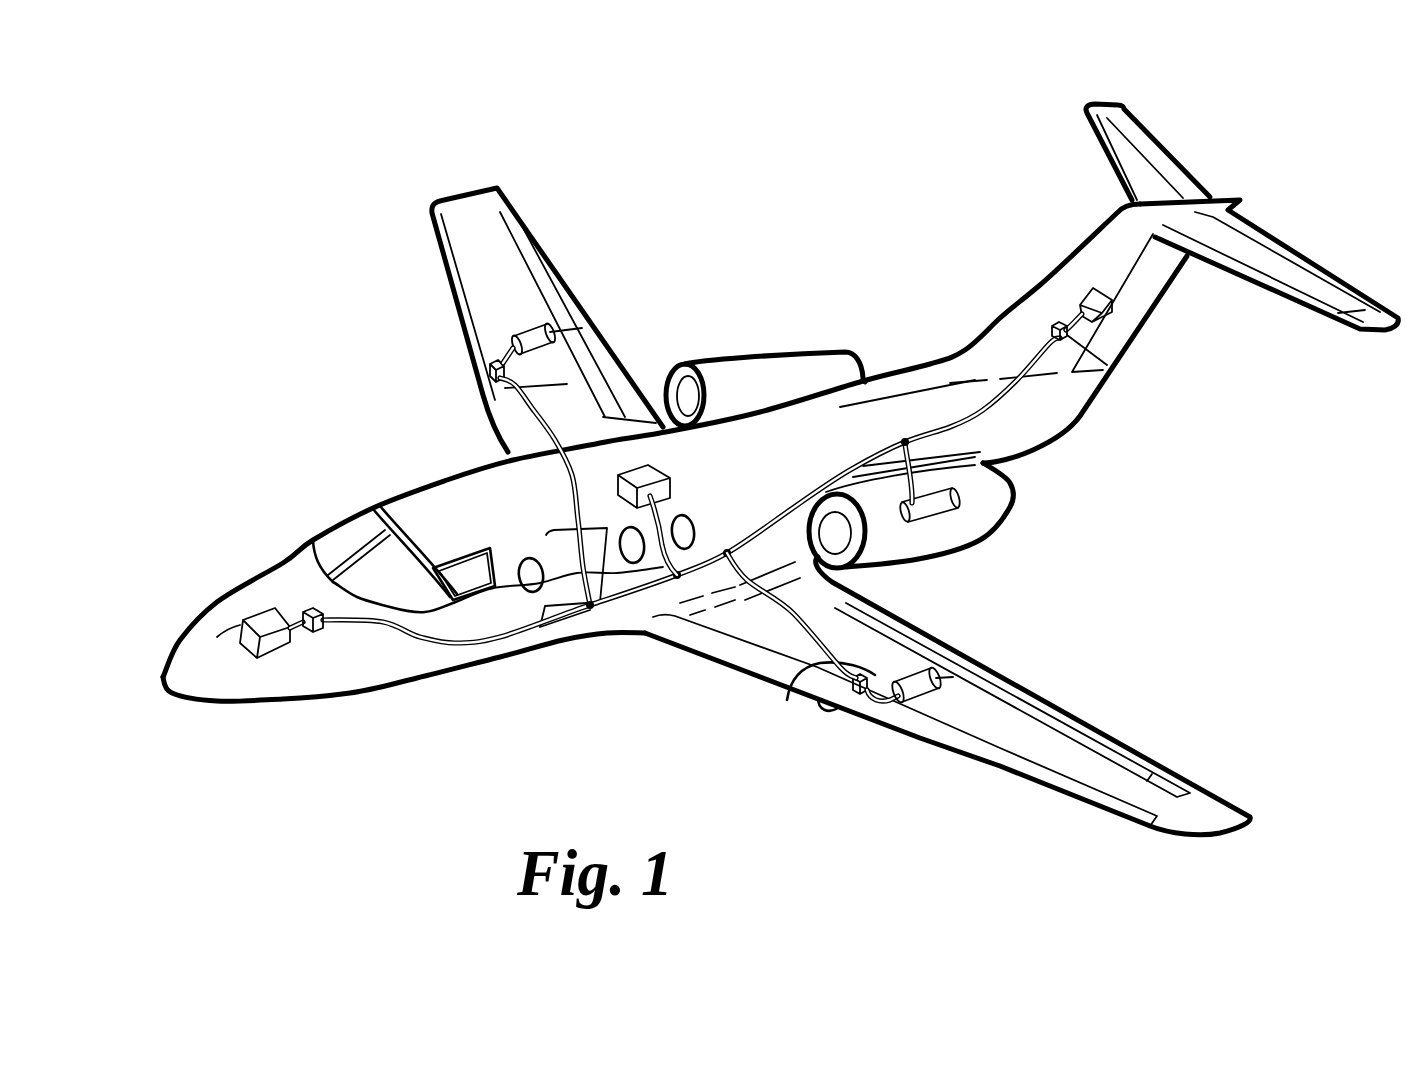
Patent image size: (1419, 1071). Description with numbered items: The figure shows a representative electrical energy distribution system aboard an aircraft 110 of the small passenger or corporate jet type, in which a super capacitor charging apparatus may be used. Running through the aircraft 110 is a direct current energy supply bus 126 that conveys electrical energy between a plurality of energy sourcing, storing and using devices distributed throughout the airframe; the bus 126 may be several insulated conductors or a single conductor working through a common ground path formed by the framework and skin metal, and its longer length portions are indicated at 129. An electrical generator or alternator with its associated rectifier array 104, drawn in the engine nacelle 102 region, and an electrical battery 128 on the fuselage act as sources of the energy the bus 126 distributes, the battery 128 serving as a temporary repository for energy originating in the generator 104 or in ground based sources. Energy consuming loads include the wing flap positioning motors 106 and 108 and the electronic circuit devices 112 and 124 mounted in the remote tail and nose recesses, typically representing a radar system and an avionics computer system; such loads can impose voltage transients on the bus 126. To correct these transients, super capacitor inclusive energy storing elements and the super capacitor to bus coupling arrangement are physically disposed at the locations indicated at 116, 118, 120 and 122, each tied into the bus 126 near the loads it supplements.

The engine nacelle 102 is at (848, 566).
The electrical generator or alternator and associated rectifier array 104 is at (947, 513).
The wing flap positioning motor 106 is at (917, 694).
The wing flap positioning motor 108 is at (528, 327).
The aircraft 110 is at (443, 678).
The electronic circuit device 112 is at (1103, 303).
The super capacitor energy storing element and bus coupling arrangement location 116 is at (319, 632).
The super capacitor energy storing element and bus coupling arrangement location 118 is at (1106, 361).
The super capacitor energy storing element and bus coupling arrangement location 120 is at (810, 664).
The super capacitor energy storing element and bus coupling arrangement location 122 is at (480, 373).
The electronic circuit device 124 is at (257, 607).
The direct current energy supply bus 126 is at (880, 448).
The electrical battery 128 is at (673, 486).
The longer length portion of the energy supply bus 129 is at (953, 316).